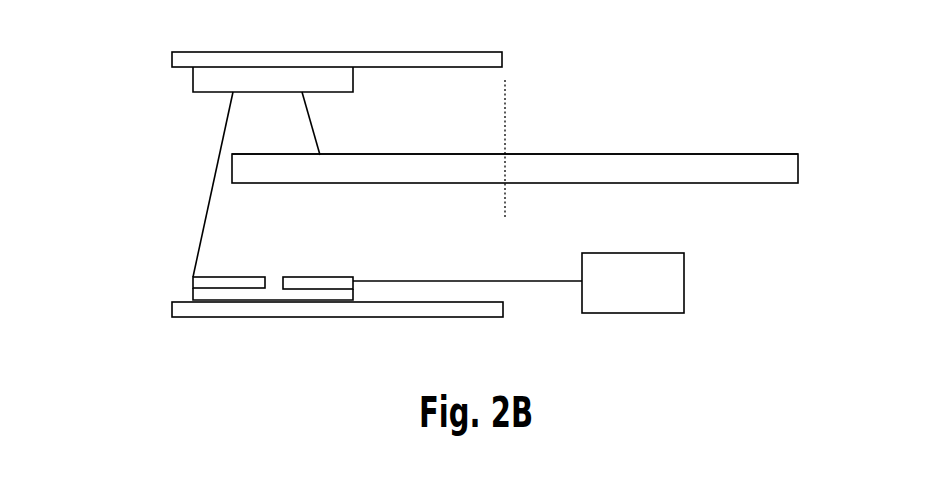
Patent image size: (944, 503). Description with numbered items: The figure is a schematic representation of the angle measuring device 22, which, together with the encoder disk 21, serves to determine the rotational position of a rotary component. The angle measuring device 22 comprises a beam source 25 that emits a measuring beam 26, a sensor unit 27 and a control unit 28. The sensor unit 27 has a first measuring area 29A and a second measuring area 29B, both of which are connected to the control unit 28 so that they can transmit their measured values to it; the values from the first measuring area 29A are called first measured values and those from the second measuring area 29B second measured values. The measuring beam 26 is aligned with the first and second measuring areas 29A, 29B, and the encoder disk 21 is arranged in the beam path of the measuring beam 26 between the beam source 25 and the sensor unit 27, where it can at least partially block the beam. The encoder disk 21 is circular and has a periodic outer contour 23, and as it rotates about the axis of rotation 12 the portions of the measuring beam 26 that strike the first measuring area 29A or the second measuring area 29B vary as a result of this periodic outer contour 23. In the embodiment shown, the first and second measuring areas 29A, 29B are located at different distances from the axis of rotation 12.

The axis of rotation 12 is at (507, 122).
The encoder disk 21 is at (720, 167).
The angle measuring device 22 is at (634, 48).
The periodic outer contour 23 is at (800, 168).
The beam source 25 is at (146, 60).
The measuring beam 26 is at (313, 127).
The sensor unit 27 is at (150, 291).
The control unit 28 is at (684, 283).
The first measuring area 29A is at (228, 276).
The second measuring area 29B is at (313, 276).